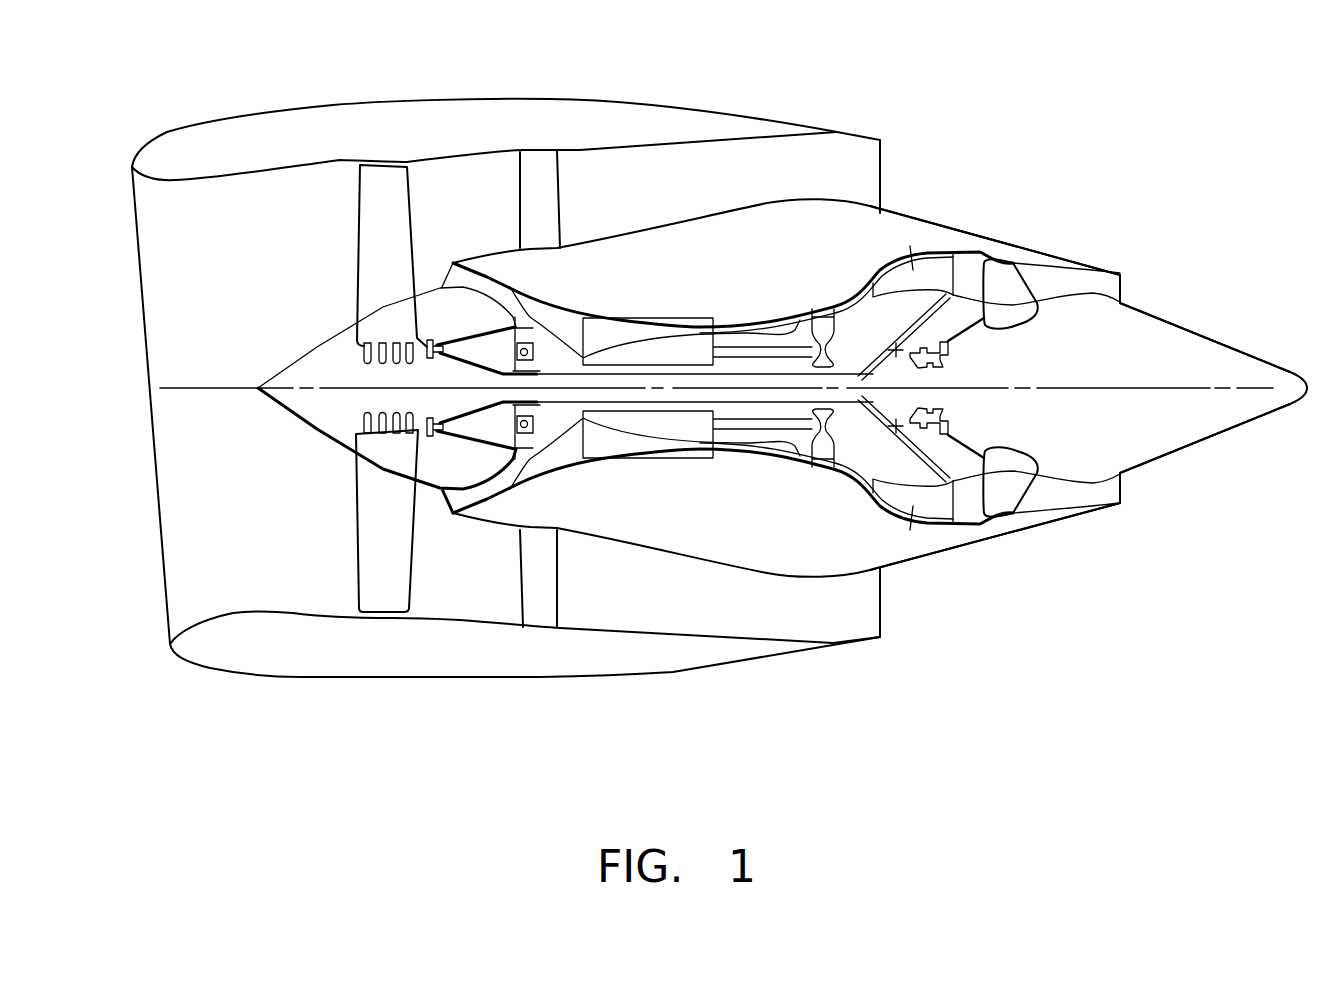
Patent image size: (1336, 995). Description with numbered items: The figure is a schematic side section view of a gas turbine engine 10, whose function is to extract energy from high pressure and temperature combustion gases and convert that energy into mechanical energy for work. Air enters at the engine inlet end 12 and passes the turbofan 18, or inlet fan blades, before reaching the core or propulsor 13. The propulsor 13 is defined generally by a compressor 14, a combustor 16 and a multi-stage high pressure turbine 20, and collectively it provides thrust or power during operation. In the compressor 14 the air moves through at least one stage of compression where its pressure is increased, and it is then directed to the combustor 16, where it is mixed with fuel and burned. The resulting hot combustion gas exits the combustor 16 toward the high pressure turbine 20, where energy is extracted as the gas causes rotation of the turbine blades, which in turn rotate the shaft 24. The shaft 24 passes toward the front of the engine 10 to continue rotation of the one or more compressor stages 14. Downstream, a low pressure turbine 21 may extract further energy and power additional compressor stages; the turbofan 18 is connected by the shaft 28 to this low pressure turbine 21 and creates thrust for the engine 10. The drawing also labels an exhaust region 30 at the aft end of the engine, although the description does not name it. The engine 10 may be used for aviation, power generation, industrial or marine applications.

The gas turbine engine 10 is at (848, 111).
The engine inlet end 12 is at (156, 215).
The core or propulsor 13 is at (702, 268).
The compressor 14 is at (600, 333).
The combustor 16 is at (780, 327).
The turbofan 18 is at (375, 553).
The multi-stage high pressure turbine 20 is at (820, 468).
The low pressure turbine 21 is at (908, 505).
The shaft 24 is at (607, 395).
The shaft 28 is at (743, 427).
The exhaust section 30 is at (918, 180).